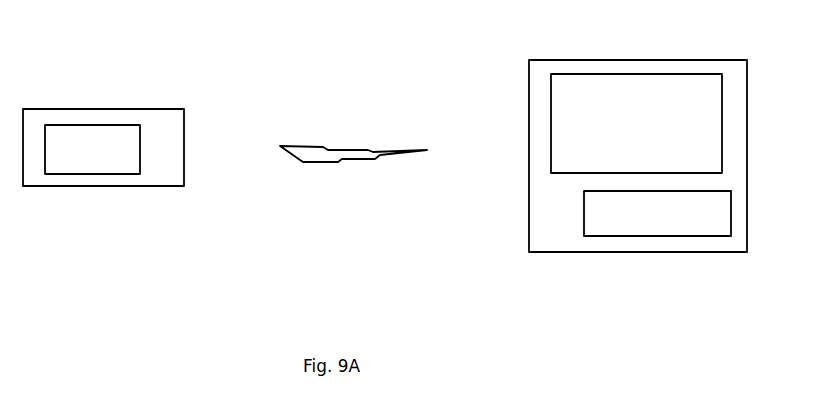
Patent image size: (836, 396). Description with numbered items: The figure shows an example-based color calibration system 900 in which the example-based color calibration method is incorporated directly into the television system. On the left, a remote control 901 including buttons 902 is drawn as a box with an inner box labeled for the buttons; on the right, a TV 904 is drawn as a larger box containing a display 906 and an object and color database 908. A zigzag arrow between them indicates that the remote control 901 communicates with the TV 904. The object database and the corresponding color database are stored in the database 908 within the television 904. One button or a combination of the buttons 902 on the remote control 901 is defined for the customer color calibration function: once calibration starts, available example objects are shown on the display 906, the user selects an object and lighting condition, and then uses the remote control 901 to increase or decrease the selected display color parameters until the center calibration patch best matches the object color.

The example-based color calibration system 900 is at (332, 328).
The remote control 901 is at (160, 108).
The buttons 902 is at (80, 123).
The TV 904 is at (529, 195).
The display 906 is at (678, 73).
The object and color database 908 is at (733, 215).